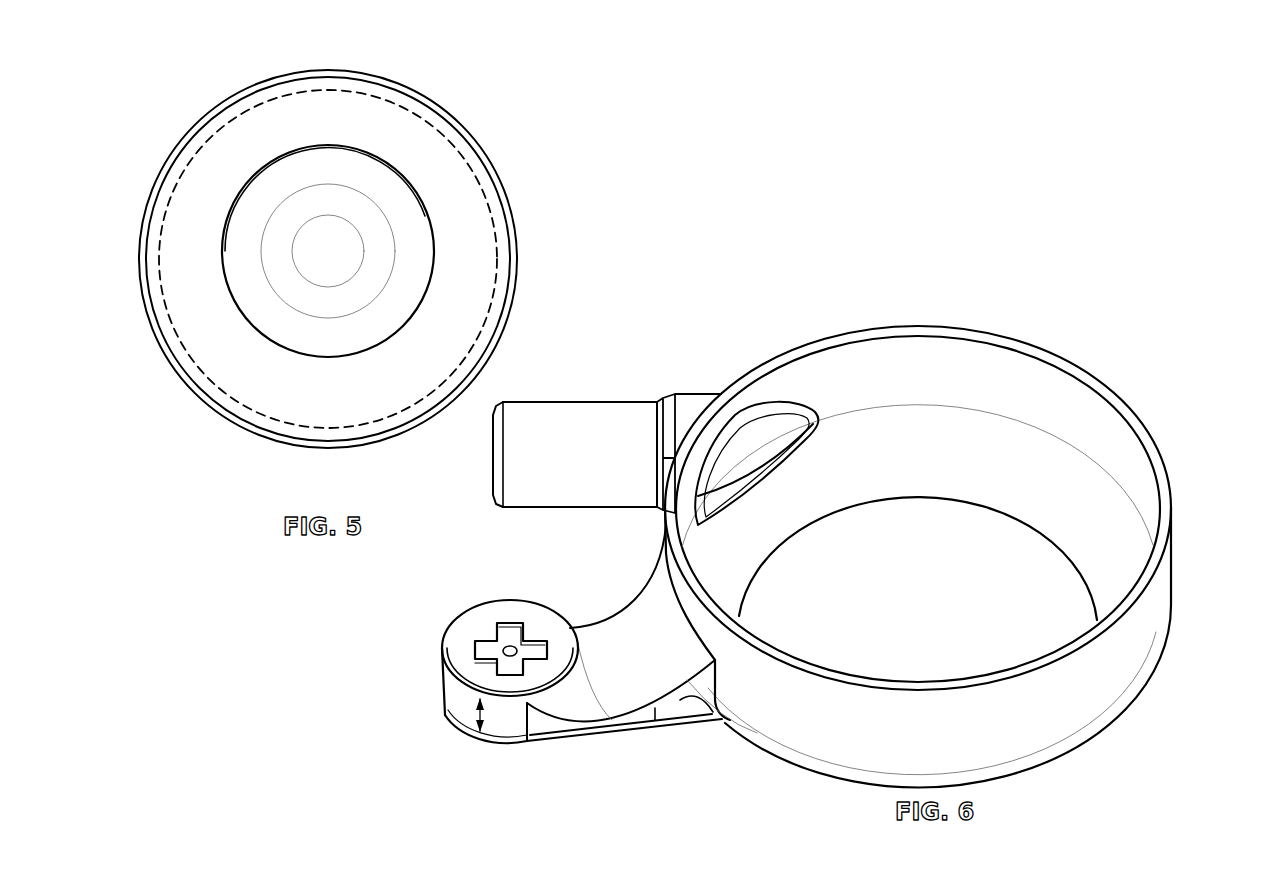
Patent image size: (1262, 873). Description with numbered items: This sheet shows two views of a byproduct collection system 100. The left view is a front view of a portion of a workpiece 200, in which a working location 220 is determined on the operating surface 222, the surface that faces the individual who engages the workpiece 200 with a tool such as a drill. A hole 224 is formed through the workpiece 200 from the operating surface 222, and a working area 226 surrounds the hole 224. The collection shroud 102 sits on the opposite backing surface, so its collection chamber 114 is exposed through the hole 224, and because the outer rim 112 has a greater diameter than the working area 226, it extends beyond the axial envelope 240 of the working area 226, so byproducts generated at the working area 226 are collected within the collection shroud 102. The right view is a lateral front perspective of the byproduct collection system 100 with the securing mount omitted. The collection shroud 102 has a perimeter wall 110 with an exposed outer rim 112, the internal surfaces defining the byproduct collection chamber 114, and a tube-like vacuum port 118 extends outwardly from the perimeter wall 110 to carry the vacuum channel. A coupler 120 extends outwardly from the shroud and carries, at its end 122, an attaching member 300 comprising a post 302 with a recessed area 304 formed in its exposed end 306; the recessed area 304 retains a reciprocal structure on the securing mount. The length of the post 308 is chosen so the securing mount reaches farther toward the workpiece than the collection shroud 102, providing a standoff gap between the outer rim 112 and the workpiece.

In FIG. 5, the byproduct collection system 100 is at (370, 308).
In FIG. 6, the byproduct collection system 100 is at (1134, 327).
In FIG. 5, the collection shroud 102 is at (262, 256).
In FIG. 6, the collection shroud 102 is at (1129, 414).
In FIG. 6, the perimeter wall 110 is at (1062, 381).
In FIG. 6, the outer rim 112 is at (1155, 465).
In FIG. 5, the byproduct collection chamber 114 is at (370, 272).
In FIG. 6, the byproduct collection chamber 114 is at (1055, 510).
In FIG. 6, the vacuum port 118 is at (583, 415).
In FIG. 6, the coupler 120 is at (642, 727).
In FIG. 6, the end 122 is at (535, 737).
In FIG. 5, the workpiece 200 is at (497, 112).
In FIG. 5, the working location 220 is at (460, 186).
In FIG. 5, the operating surface 222 is at (418, 147).
In FIG. 5, the hole 224 is at (377, 153).
In FIG. 5, the working area 226 is at (472, 235).
In FIG. 5, the axial envelope 240 is at (490, 310).
In FIG. 6, the attaching member 300 is at (507, 617).
In FIG. 6, the post 302 is at (553, 612).
In FIG. 6, the recessed area 304 is at (498, 653).
In FIG. 6, the exposed end 306 is at (535, 610).
In FIG. 6, the length of the post 308 is at (465, 717).